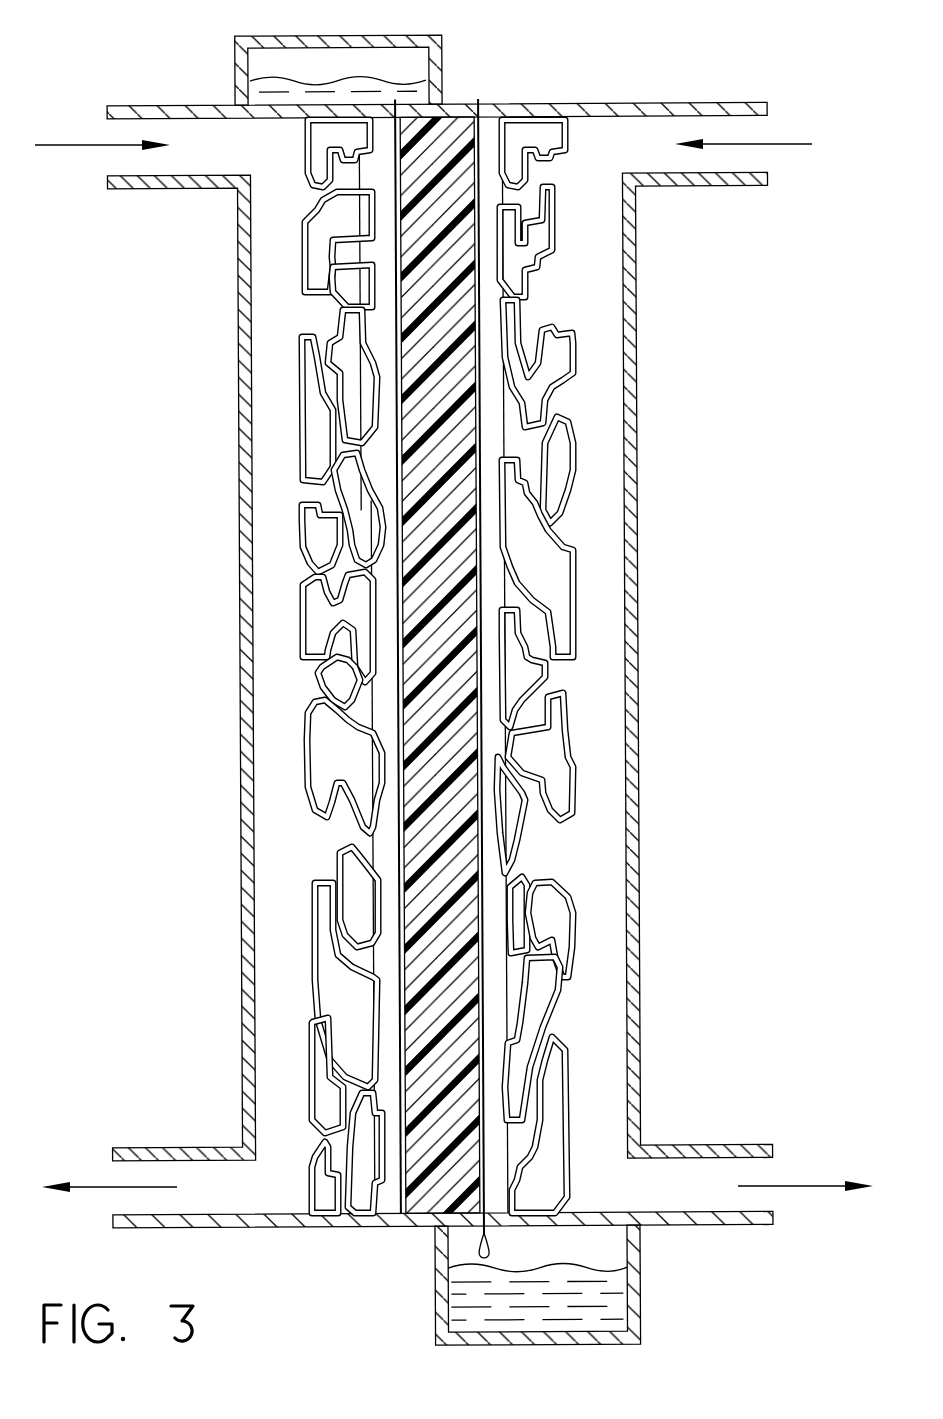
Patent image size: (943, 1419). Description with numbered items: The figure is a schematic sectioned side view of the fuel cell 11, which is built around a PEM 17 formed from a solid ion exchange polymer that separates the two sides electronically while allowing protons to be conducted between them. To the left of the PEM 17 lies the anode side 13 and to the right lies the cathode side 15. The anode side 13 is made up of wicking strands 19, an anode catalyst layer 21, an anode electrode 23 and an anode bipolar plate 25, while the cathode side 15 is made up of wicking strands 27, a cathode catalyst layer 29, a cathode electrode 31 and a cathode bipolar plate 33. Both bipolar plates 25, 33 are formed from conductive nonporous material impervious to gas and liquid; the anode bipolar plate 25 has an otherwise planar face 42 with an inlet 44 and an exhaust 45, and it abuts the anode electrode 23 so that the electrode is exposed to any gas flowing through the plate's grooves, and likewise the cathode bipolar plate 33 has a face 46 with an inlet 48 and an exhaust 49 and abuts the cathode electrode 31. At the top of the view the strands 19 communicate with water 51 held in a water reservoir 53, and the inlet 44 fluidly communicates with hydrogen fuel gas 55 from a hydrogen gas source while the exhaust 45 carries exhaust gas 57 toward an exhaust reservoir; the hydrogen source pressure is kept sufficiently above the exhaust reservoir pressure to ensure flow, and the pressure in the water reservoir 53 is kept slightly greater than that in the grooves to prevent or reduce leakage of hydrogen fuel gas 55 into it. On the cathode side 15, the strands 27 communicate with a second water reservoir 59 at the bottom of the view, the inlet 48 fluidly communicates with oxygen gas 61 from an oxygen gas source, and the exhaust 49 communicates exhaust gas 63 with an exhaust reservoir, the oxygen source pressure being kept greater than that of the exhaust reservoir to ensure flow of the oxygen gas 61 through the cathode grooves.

The fuel cell 11 is at (104, 48).
The anode side 13 is at (138, 99).
The cathode side 15 is at (777, 95).
The PEM 17 is at (455, 622).
The wicking strands 19 is at (398, 233).
The anode catalyst layer 21 is at (372, 172).
The anode electrode 23 is at (300, 397).
The anode bipolar plate 25 is at (241, 720).
The wicking strands 27 is at (481, 285).
The cathode catalyst layer 29 is at (492, 188).
The cathode electrode 31 is at (580, 356).
The cathode bipolar plate 33 is at (645, 745).
The face 42 is at (250, 462).
The inlet 44 is at (122, 175).
The exhaust 45 is at (155, 1215).
The face 46 is at (623, 503).
The inlet 48 is at (737, 174).
The exhaust 49 is at (743, 1212).
The water 51 is at (312, 80).
The water reservoir 53 is at (443, 72).
The hydrogen fuel gas 55 is at (73, 140).
The exhaust gas 57 is at (97, 1185).
The water reservoir 59 is at (642, 1287).
The oxygen gas 61 is at (787, 145).
The exhaust gas 63 is at (805, 1186).